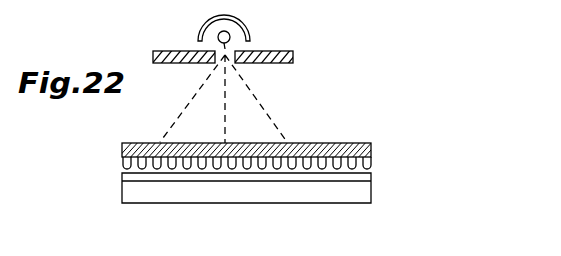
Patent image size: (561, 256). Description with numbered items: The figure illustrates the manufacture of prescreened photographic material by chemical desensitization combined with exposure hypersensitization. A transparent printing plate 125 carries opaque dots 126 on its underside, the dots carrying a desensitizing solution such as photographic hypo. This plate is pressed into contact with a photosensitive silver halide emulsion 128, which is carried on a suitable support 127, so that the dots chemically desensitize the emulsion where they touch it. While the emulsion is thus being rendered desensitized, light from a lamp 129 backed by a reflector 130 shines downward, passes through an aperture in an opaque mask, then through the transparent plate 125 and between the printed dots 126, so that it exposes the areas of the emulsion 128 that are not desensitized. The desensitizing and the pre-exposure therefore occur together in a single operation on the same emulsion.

The transparent printing plate 125 is at (372, 150).
The opaque dots 126 is at (372, 169).
The support 127 is at (372, 198).
The photosensitive silver halide emulsion 128 is at (372, 182).
The lamp 129 is at (230, 40).
The reflector 130 is at (246, 30).